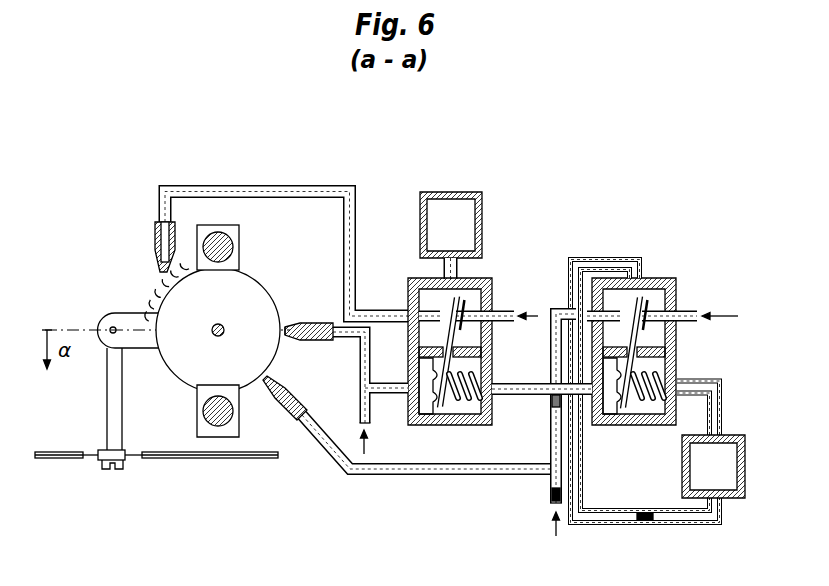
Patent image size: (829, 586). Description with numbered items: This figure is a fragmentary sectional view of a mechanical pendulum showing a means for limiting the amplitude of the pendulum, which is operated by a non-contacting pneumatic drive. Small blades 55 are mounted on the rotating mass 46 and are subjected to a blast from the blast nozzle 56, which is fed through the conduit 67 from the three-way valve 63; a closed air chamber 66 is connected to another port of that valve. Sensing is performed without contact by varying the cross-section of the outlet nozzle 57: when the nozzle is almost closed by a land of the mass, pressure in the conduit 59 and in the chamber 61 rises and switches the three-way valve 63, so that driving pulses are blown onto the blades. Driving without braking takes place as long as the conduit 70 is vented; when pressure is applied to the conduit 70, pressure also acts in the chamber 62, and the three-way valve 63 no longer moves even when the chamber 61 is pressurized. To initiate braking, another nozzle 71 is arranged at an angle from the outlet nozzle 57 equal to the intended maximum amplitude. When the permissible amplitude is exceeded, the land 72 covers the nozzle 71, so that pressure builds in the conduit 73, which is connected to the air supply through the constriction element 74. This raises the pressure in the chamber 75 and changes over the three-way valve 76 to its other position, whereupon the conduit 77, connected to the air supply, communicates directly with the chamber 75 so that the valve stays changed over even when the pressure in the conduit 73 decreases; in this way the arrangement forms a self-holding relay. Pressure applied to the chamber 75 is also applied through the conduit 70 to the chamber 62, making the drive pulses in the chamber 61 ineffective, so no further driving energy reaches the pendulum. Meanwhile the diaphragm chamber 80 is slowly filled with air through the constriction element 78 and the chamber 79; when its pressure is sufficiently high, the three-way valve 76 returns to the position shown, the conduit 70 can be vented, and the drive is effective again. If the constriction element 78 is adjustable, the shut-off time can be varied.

The rotating mass 46 is at (178, 367).
The small blades 55 is at (154, 301).
The blast nozzle 56 is at (156, 247).
The outlet nozzle 57 is at (296, 322).
The conduit 59 is at (371, 358).
The chamber 61 is at (427, 414).
The chamber 62 is at (476, 405).
The three-way valve 63 is at (487, 284).
The closed air chamber 66 is at (448, 192).
The conduit 67 is at (261, 185).
The conduit 70 is at (525, 396).
The nozzle 71 is at (281, 396).
The land 72 is at (279, 333).
The conduit 73 is at (373, 478).
The constriction element 74 is at (559, 506).
The chamber 75 is at (609, 408).
The three-way valve 76 is at (662, 278).
The conduit 77 is at (690, 309).
The constriction element 78 is at (645, 526).
The chamber 79 is at (729, 482).
The diaphragm chamber 80 is at (657, 408).